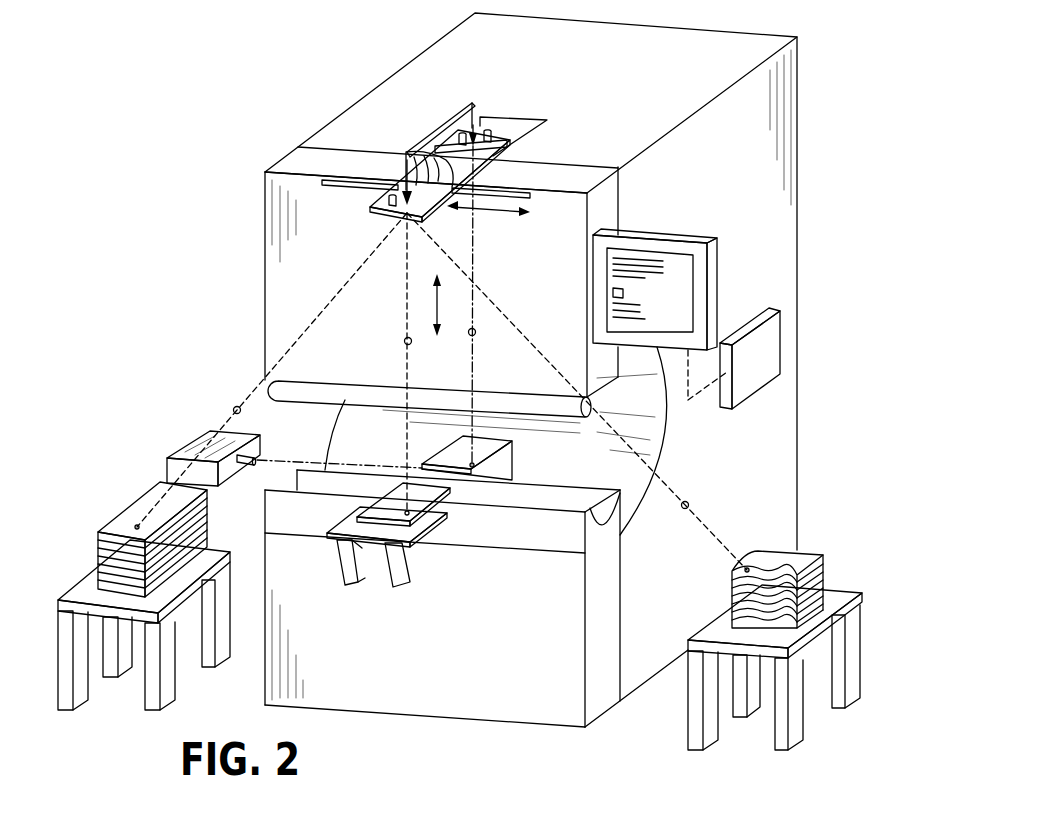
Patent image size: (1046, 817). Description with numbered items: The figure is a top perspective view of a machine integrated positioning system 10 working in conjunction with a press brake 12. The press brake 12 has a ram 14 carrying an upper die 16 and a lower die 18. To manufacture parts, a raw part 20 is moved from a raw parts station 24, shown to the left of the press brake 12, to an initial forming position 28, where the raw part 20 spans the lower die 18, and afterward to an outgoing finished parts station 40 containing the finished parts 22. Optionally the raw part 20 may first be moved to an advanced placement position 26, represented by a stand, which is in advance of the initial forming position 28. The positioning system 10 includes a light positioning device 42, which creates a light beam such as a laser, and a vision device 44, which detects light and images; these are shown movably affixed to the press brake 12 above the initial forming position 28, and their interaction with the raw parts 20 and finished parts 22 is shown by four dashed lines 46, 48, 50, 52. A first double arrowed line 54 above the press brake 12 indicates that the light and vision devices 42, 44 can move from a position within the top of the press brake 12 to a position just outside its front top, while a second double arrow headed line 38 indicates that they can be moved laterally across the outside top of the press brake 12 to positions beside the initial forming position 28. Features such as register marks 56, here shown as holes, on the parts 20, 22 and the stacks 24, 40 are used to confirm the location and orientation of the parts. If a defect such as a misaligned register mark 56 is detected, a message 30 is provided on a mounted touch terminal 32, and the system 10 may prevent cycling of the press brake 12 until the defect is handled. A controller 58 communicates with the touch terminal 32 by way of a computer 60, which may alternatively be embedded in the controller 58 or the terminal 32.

The machine integrated positioning system 10 is at (870, 95).
The press brake 12 is at (798, 63).
The ram 14 is at (616, 200).
The upper die 16 is at (303, 393).
The lower die 18 is at (622, 503).
The raw part 20 is at (98, 553).
The finished part 22 is at (822, 563).
The raw parts station 24 is at (122, 497).
The advanced placement position 26 is at (370, 549).
The initial forming position 28 is at (508, 462).
The message 30 is at (623, 293).
The mounted touch terminal 32 is at (718, 293).
The second double arrow headed line 38 is at (490, 211).
The finished parts station 40 is at (826, 520).
The light positioning device 42 is at (370, 204).
The vision device 44 is at (366, 231).
The dashed line 46 is at (236, 407).
The dashed line 48 is at (404, 343).
The dashed line 50 is at (476, 335).
The dashed line 52 is at (688, 503).
The first double arrowed line 54 is at (441, 125).
The register mark 56 is at (136, 527).
The controller 58 is at (781, 347).
The computer 60 is at (718, 258).